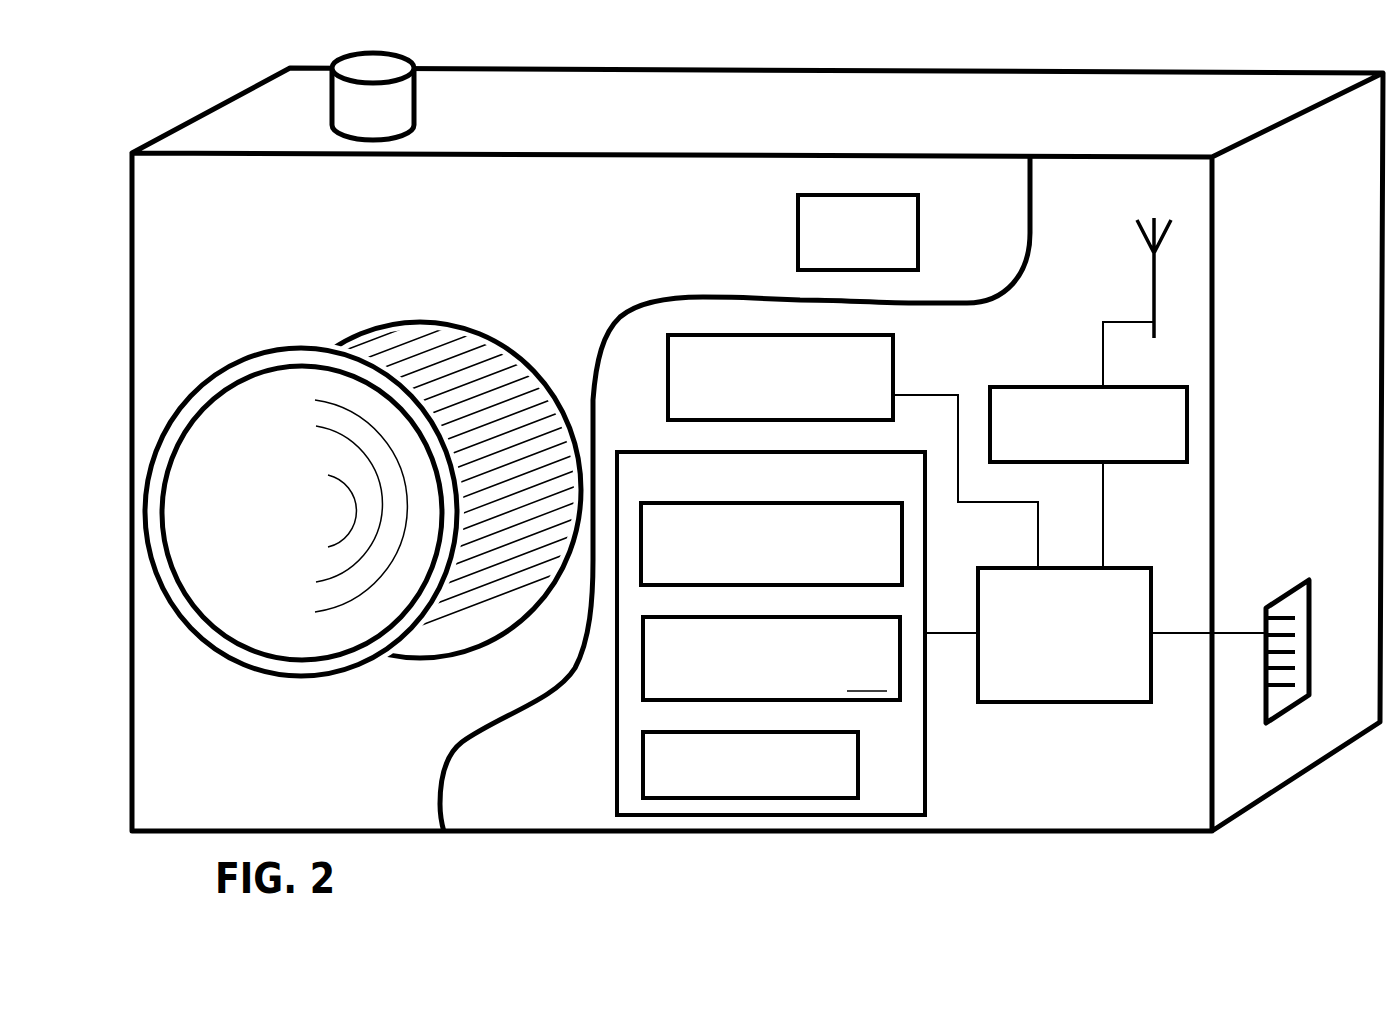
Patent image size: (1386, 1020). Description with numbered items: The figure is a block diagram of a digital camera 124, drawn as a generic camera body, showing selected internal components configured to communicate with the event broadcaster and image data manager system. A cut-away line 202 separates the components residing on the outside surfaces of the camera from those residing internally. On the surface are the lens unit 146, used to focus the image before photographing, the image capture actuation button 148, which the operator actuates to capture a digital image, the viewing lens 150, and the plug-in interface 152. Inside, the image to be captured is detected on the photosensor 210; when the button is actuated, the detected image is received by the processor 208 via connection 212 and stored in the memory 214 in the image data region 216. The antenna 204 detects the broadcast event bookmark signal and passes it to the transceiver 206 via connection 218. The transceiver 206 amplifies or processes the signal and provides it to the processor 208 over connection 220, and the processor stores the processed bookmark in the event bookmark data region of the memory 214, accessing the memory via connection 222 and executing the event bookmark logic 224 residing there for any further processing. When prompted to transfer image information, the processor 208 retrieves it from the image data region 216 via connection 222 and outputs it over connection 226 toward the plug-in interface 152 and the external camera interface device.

The digital camera 124 is at (243, 85).
The image capture actuation button 148 is at (417, 83).
The lens unit 146 is at (391, 319).
The cut-away line 202 is at (670, 298).
The viewing lens 150 is at (798, 237).
The antenna 204 is at (1150, 292).
The connection 218 is at (1103, 363).
The connection 212 is at (958, 393).
The photosensor 210 is at (882, 413).
The transceiver 206 is at (1135, 452).
The connection 222 is at (937, 633).
The connection 220 is at (1103, 557).
The event bookmark logic 224 is at (843, 576).
The image data region 216 is at (807, 790).
The memory 214 is at (771, 633).
The connection 226 is at (1230, 635).
The plug-in interface 152 is at (1300, 707).
The processor 208 is at (1100, 693).